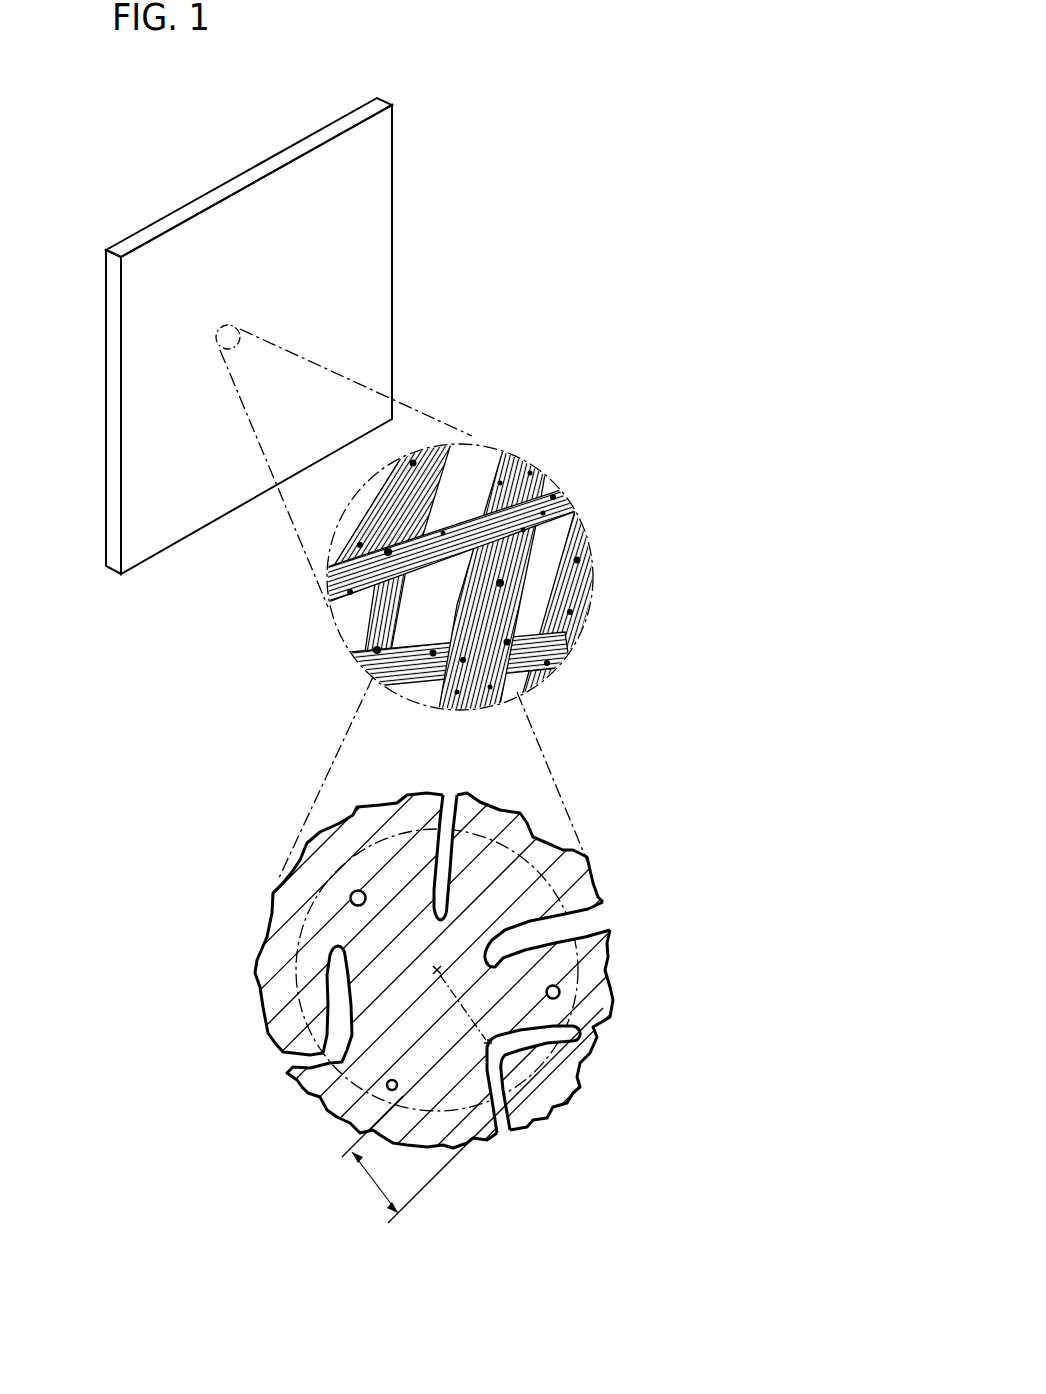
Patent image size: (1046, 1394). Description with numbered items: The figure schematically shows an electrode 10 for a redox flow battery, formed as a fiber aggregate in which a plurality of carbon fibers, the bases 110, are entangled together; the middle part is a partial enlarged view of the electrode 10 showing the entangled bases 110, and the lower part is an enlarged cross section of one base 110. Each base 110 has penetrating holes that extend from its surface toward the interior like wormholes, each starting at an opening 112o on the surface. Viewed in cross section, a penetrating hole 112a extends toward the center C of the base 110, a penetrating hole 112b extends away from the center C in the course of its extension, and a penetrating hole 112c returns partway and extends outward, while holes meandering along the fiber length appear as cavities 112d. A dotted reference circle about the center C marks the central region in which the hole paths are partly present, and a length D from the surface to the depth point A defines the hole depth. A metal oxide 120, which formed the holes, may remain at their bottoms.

The electrode 10 is at (181, 203).
The base 110 is at (446, 791).
The penetrating hole 112a is at (450, 882).
The penetrating hole 112b is at (331, 993).
The penetrating hole 112c is at (560, 1095).
The cavity 112d is at (351, 897).
The opening 112o is at (596, 906).
The metal oxide 120 is at (430, 900).